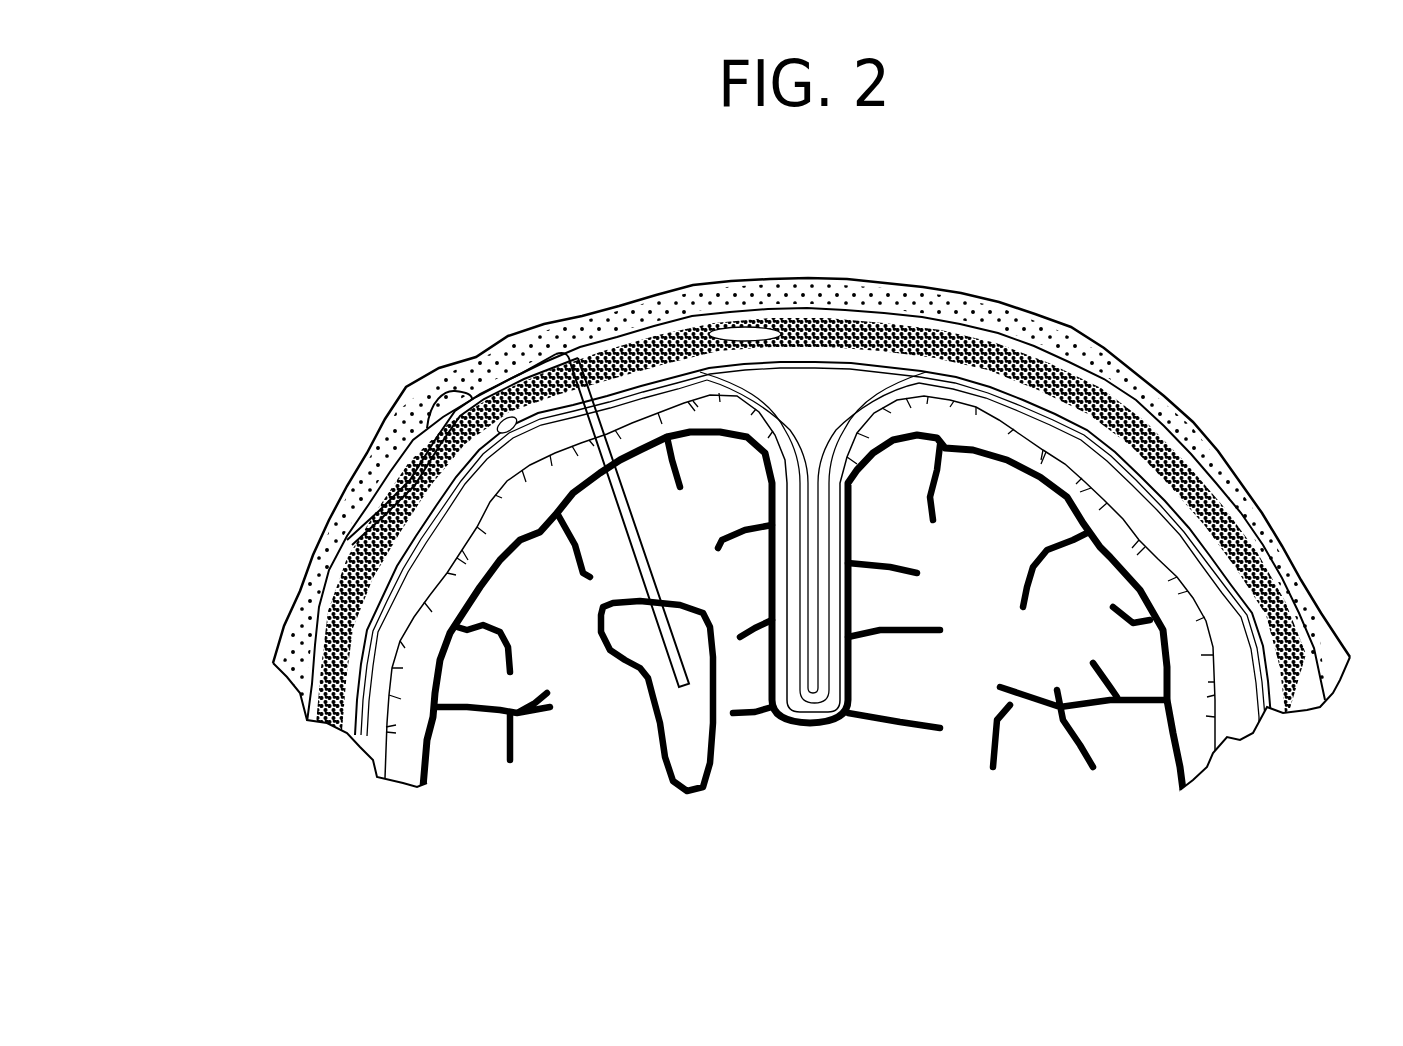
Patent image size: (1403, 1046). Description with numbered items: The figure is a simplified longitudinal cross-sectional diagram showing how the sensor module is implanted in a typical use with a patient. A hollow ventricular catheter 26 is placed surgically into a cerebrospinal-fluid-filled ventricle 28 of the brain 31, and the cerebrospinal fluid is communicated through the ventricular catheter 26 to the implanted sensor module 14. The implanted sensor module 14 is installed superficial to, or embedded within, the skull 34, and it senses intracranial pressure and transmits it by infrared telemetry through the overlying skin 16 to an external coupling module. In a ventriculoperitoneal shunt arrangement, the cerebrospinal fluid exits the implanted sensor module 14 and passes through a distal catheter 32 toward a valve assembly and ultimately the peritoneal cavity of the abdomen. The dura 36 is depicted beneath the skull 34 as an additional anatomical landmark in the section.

The implanted sensor module 14 is at (403, 420).
The skin 16 is at (1000, 303).
The ventricular catheter 26 is at (677, 663).
The ventricle 28 is at (627, 637).
The brain 31 is at (1093, 567).
The distal catheter 32 is at (363, 519).
The skull 34 is at (1107, 387).
The dura 36 is at (1125, 452).